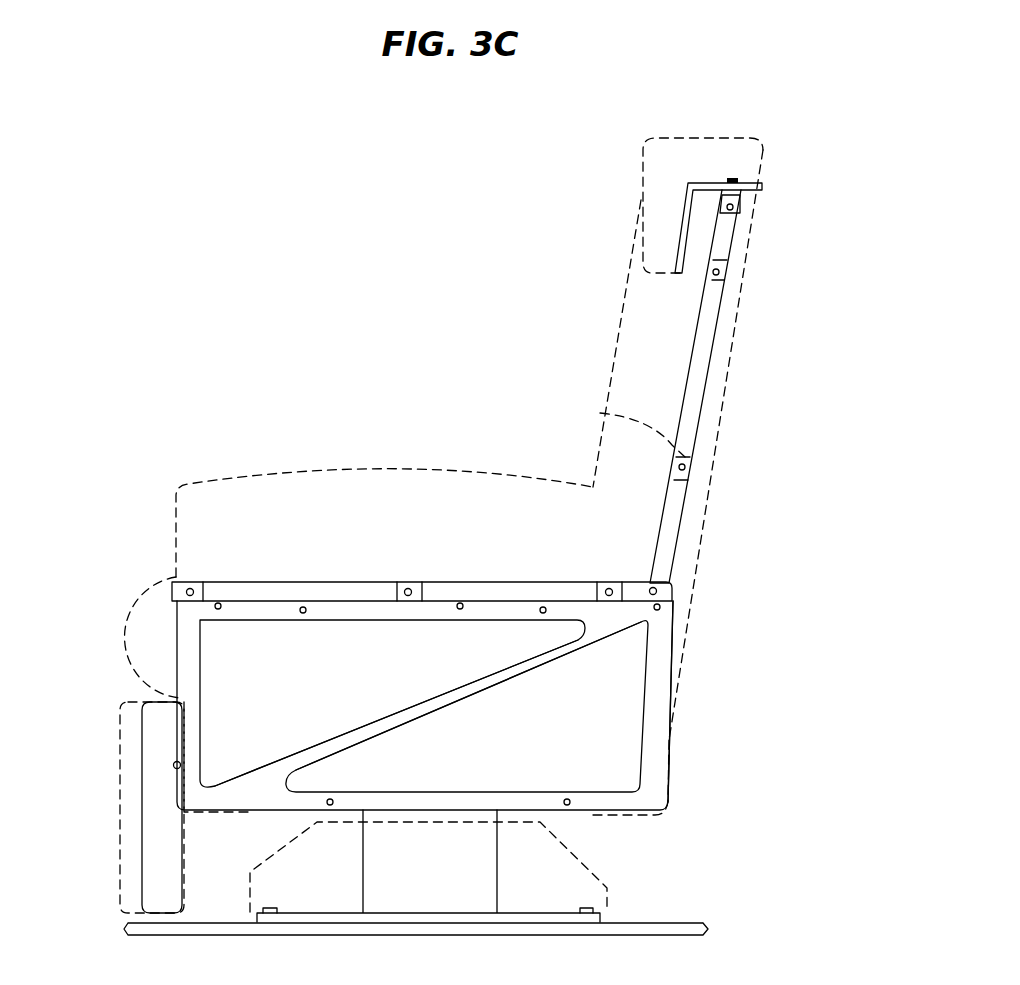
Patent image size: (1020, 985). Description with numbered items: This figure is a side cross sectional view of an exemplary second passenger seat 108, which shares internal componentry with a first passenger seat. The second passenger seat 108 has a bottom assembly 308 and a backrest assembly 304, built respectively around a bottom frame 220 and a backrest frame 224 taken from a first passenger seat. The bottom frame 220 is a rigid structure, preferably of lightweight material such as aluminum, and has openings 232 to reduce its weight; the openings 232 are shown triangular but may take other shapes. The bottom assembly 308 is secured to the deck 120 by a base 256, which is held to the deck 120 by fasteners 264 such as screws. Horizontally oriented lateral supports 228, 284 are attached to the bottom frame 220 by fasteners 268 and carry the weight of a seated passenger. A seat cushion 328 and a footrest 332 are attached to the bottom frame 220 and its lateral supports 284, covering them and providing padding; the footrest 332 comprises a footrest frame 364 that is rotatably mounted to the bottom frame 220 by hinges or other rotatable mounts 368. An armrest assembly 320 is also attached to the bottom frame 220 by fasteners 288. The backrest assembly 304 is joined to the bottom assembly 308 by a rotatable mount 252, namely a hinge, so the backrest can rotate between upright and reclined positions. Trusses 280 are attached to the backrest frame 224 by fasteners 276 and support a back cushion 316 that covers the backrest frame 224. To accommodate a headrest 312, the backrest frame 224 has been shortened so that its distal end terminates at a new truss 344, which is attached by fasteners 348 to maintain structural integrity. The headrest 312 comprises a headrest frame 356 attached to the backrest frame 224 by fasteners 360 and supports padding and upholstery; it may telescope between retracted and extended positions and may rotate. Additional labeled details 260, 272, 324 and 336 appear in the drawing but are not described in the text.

The second passenger seat 108 is at (369, 196).
The deck 120 is at (416, 908).
The bottom frame 220 is at (694, 707).
The backrest frame 224 is at (655, 386).
The lateral support 228 is at (422, 654).
The opening 232 is at (428, 704).
The rotatable mount 252 is at (711, 563).
The base 256 is at (428, 891).
The fastener 260 is at (448, 781).
The fastener 264 is at (398, 886).
The fastener 268 is at (479, 655).
The fastener 272 is at (472, 654).
The fastener 276 is at (746, 389).
The truss 280 is at (680, 398).
The lateral support 284 is at (405, 576).
The fastener 288 is at (423, 580).
The backrest assembly 304 is at (783, 416).
The bottom assembly 308 is at (733, 626).
The headrest 312 is at (663, 195).
The back cushion 316 is at (595, 263).
The armrest assembly 320 is at (422, 616).
The seat back cushion 324 is at (728, 445).
The seat cushion 328 is at (108, 628).
The footrest 332 is at (104, 807).
The pedestal cover 336 is at (405, 867).
The new truss 344 is at (778, 248).
The fastener 348 is at (768, 177).
The headrest frame 356 is at (688, 178).
The fastener 360 is at (772, 141).
The footrest frame 364 is at (125, 807).
The rotatable mount 368 is at (120, 738).